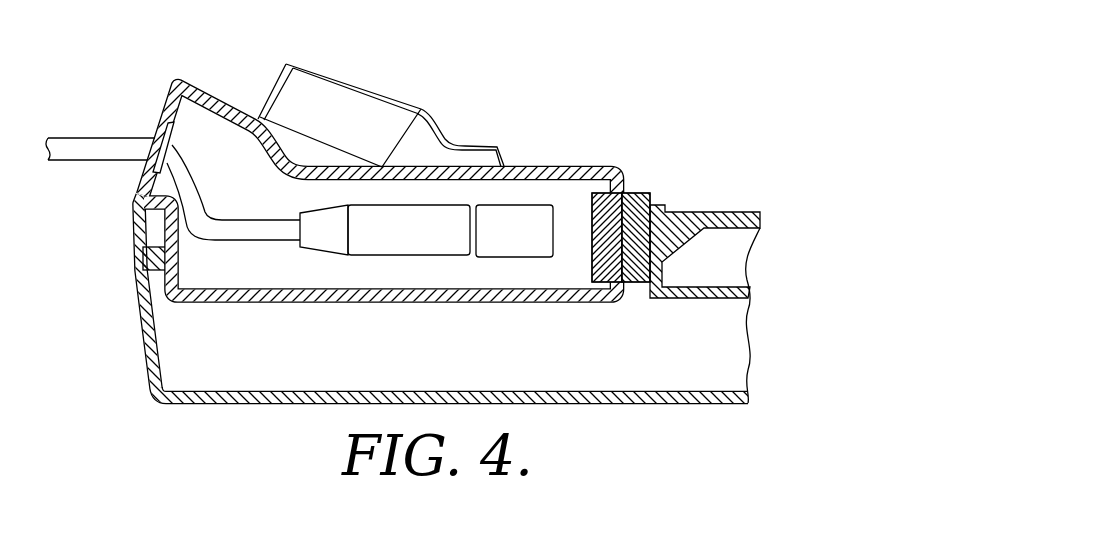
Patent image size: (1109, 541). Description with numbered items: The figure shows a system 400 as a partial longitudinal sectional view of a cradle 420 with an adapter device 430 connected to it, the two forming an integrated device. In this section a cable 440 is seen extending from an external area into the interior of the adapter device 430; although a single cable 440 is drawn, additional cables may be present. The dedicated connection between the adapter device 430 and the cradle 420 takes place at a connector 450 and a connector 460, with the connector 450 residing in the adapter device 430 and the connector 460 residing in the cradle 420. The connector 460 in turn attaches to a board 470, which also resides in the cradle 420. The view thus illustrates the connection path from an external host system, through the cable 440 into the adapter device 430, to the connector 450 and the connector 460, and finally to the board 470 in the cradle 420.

The system 400 is at (405, 222).
The cradle 420 is at (707, 404).
The adapter device 430 is at (553, 165).
The cable 440 is at (115, 138).
The connector 450 is at (592, 265).
The connector 460 is at (640, 192).
The board 470 is at (705, 298).